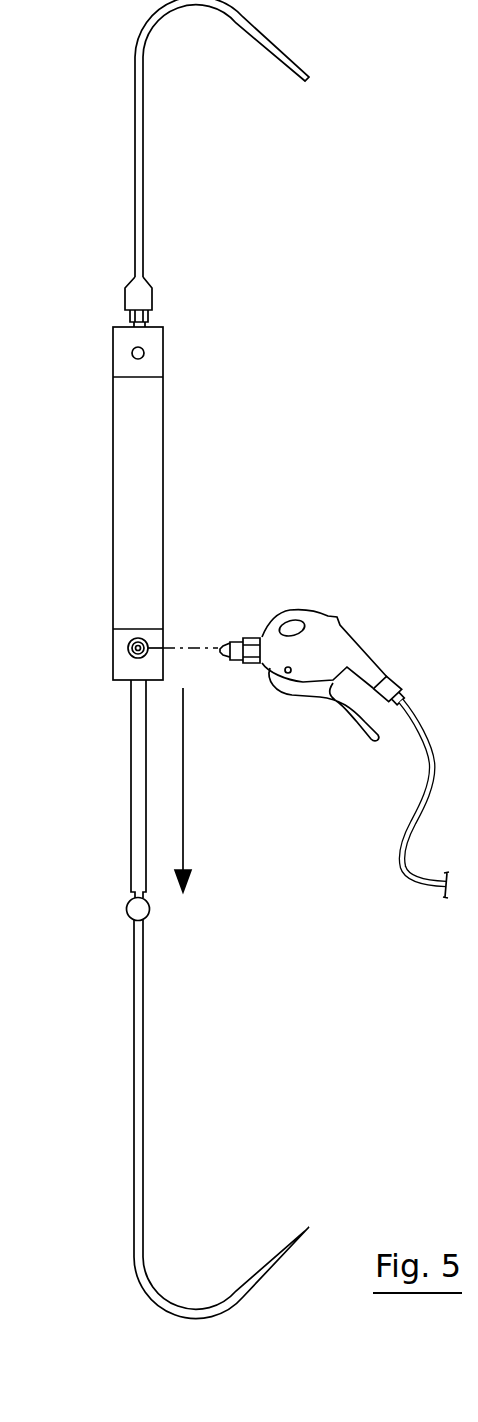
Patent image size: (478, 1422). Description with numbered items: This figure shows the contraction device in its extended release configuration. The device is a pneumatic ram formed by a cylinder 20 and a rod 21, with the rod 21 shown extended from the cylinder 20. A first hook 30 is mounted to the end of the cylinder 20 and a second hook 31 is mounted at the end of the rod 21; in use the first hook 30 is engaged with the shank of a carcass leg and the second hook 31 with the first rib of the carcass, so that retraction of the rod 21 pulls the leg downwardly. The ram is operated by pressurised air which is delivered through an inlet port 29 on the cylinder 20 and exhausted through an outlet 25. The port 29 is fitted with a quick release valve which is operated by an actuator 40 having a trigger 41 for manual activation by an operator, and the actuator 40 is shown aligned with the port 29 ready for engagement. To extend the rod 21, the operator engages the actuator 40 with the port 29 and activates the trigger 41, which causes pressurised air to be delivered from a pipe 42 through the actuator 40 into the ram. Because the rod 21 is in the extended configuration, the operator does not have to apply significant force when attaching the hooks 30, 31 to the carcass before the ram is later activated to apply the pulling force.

The cylinder 20 is at (145, 492).
The rod 21 is at (138, 778).
The outlet 25 is at (145, 353).
The inlet port 29 is at (128, 648).
The first hook 30 is at (252, 20).
The second hook 31 is at (247, 1287).
The actuator 40 is at (317, 640).
The trigger 41 is at (350, 703).
The pipe 42 is at (398, 855).